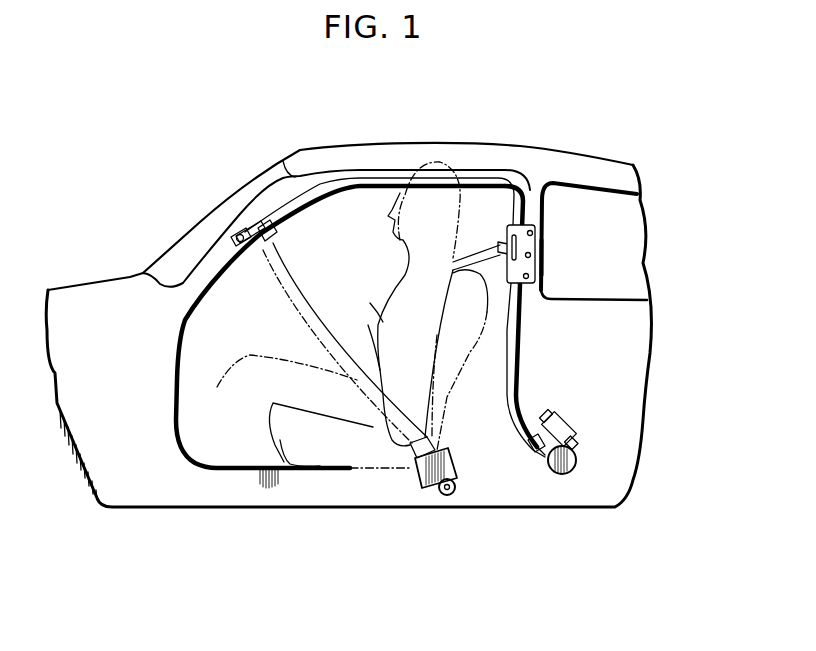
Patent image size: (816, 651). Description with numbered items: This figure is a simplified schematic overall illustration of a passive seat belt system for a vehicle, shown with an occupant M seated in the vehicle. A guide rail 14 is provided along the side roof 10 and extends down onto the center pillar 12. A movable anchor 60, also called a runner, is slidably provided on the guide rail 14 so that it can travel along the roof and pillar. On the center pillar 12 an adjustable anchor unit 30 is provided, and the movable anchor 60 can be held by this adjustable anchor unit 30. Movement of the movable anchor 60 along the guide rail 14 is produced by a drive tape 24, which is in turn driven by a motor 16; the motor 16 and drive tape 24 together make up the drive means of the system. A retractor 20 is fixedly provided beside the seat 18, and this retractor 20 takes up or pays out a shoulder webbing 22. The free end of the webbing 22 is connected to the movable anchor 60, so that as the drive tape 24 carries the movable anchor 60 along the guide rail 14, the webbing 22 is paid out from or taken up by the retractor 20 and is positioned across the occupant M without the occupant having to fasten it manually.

The side roof 10 is at (445, 145).
The center pillar 12 is at (541, 209).
The guide rail 14 is at (371, 165).
The motor 16 is at (575, 468).
The seat 18 is at (458, 468).
The retractor 20 is at (423, 476).
The webbing 22 is at (362, 356).
The drive tape 24 is at (519, 350).
The adjustable anchor unit 30 is at (539, 257).
The movable anchor 60 is at (500, 240).
The occupant M is at (392, 224).